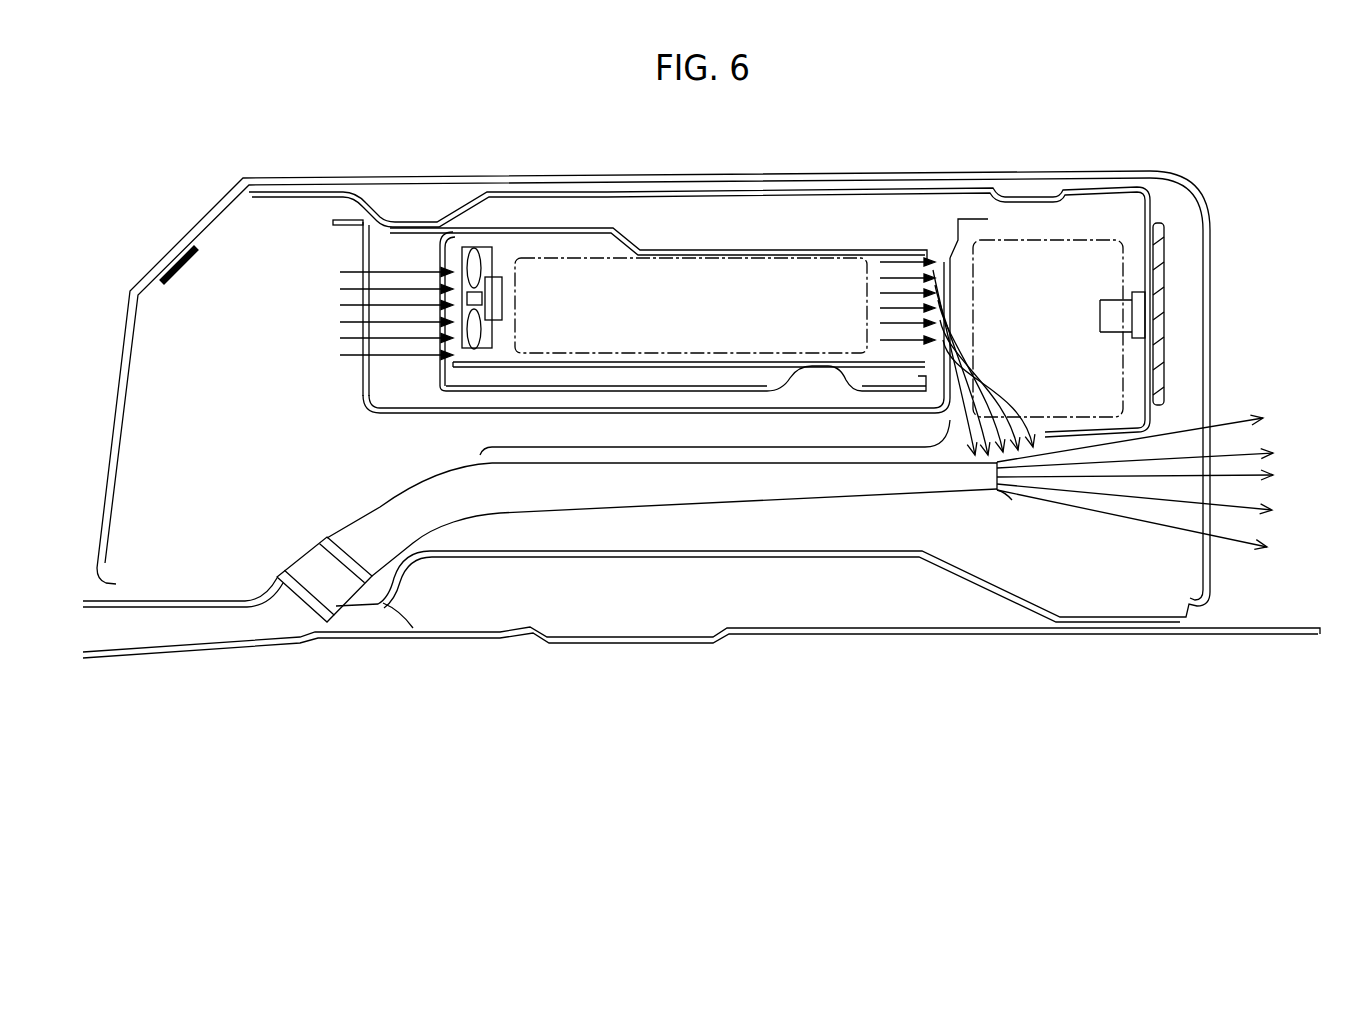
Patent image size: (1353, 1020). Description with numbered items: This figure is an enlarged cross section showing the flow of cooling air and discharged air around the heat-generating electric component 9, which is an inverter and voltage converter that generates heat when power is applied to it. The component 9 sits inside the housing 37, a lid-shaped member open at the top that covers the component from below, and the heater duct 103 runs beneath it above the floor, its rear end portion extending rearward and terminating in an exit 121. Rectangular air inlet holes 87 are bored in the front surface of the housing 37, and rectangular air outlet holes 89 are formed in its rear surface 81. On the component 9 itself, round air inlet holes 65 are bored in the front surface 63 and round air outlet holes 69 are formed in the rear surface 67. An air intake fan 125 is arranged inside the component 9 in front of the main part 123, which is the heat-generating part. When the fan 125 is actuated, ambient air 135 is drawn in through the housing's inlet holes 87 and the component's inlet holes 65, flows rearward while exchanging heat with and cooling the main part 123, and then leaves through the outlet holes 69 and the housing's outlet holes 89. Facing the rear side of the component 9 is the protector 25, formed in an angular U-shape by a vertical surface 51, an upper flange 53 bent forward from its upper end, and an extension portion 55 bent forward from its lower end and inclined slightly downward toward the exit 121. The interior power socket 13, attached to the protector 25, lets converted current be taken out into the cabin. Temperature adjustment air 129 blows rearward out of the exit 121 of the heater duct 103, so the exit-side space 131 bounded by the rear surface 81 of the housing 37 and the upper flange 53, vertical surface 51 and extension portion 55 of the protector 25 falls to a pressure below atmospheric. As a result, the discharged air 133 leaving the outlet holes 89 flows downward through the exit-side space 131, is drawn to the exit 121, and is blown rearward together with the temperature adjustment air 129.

The heat-generating electric component 9 is at (848, 388).
The interior power socket 13 is at (1140, 318).
The protector 25 is at (1157, 207).
The housing 37 is at (540, 448).
The vertical surface 51 is at (1155, 383).
The upper flange 53 is at (1073, 197).
The extension portion 55 is at (1087, 436).
The front surface 63 is at (462, 386).
The air inlet holes 65 is at (437, 343).
The rear surface 67 is at (915, 392).
The air outlet holes 69 is at (930, 300).
The rear surface 81 is at (934, 388).
The air inlet holes 87 is at (365, 370).
The air outlet holes 89 is at (923, 262).
The heater duct 103 is at (677, 497).
The exit 121 is at (1003, 490).
The main part 123 is at (657, 260).
The air intake fan 125 is at (482, 329).
The temperature adjustment air 129 is at (1110, 517).
The exit-side space 131 is at (1123, 268).
The discharged air 133 is at (1022, 397).
The ambient air 135 is at (353, 270).